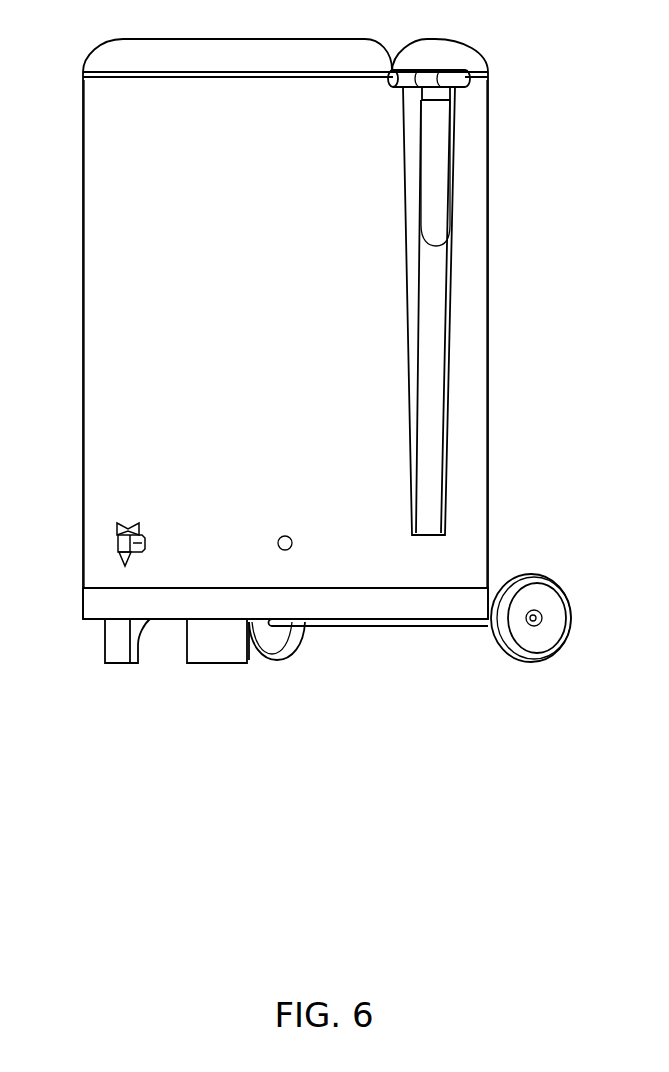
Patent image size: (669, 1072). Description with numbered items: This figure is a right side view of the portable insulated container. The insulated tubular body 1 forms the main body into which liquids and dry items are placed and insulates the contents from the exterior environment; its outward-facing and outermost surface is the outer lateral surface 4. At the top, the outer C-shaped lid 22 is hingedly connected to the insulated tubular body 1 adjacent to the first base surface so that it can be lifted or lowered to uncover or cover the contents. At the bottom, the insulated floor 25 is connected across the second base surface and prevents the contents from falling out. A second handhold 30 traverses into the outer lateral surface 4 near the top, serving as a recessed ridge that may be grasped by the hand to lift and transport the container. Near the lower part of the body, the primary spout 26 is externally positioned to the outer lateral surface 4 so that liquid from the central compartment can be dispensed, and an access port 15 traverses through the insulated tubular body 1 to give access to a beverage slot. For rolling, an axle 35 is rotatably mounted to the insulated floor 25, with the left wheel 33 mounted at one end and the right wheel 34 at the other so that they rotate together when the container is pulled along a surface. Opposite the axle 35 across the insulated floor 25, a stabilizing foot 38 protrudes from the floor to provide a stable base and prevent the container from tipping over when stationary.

The insulated tubular body 1 is at (88, 266).
The outer lateral surface 4 is at (236, 316).
The access port 15 is at (282, 542).
The outer C-shaped lid 22 is at (108, 54).
The insulated floor 25 is at (92, 602).
The primary spout 26 is at (148, 542).
The second handhold 30 is at (428, 102).
The left wheel 33 is at (289, 643).
The right wheel 34 is at (544, 588).
The axle 35 is at (430, 621).
The stabilizing foot 38 is at (115, 657).